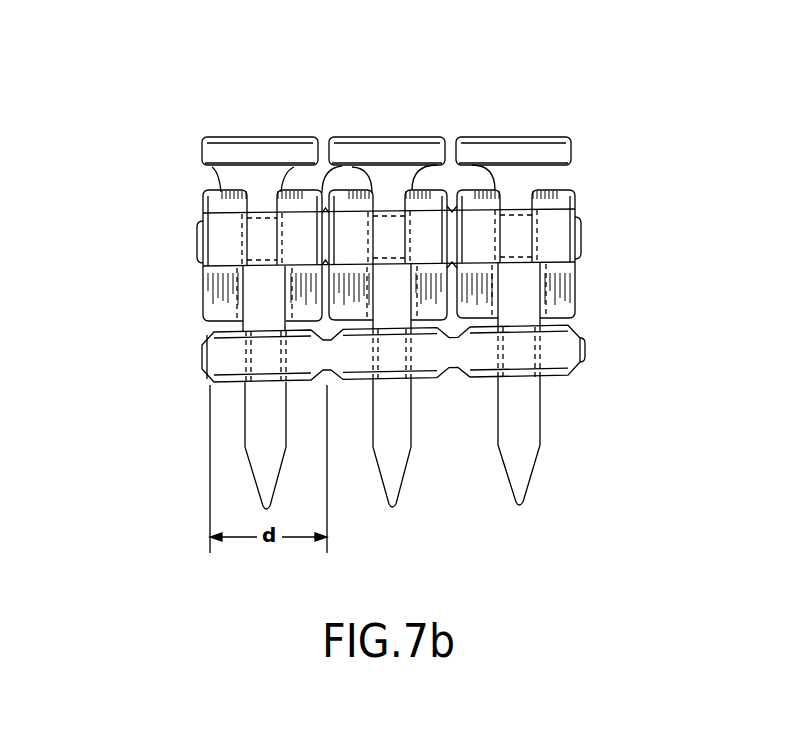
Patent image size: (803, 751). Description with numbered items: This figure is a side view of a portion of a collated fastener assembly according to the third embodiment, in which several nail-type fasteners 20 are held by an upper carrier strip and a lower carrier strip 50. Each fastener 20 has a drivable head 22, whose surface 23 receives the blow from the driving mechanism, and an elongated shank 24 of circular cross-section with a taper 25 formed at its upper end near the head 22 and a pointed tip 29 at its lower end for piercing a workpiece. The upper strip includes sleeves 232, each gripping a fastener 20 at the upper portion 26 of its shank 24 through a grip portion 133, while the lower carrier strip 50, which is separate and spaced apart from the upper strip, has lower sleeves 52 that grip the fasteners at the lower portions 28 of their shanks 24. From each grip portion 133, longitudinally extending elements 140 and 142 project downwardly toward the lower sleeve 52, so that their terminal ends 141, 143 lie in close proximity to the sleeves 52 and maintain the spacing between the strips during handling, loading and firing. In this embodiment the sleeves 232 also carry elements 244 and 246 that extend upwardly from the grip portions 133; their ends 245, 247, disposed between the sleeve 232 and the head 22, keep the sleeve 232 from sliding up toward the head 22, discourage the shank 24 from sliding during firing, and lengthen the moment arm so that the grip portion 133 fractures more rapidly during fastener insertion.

The fastener 20 is at (601, 260).
The drivable head 22 is at (573, 152).
The surface 23 is at (548, 136).
The elongated shank 24 is at (536, 300).
The taper 25 is at (553, 167).
The upper portion of shank 26 is at (574, 196).
The lower portion of shank 28 is at (541, 416).
The pointed tip 29 is at (527, 491).
The lower carrier strip 50 is at (323, 410).
The lower sleeve 52 is at (277, 337).
The grip portion 133 is at (203, 218).
The longitudinally extending element 140 is at (154, 334).
The terminal end 141 is at (212, 326).
The longitudinally extending element 142 is at (318, 212).
The terminal end 143 is at (293, 331).
The sleeve 232 is at (304, 234).
The upper element 244 is at (206, 195).
The end of upper element 245 is at (221, 192).
The upper element 246 is at (343, 274).
The end of upper element 247 is at (279, 190).